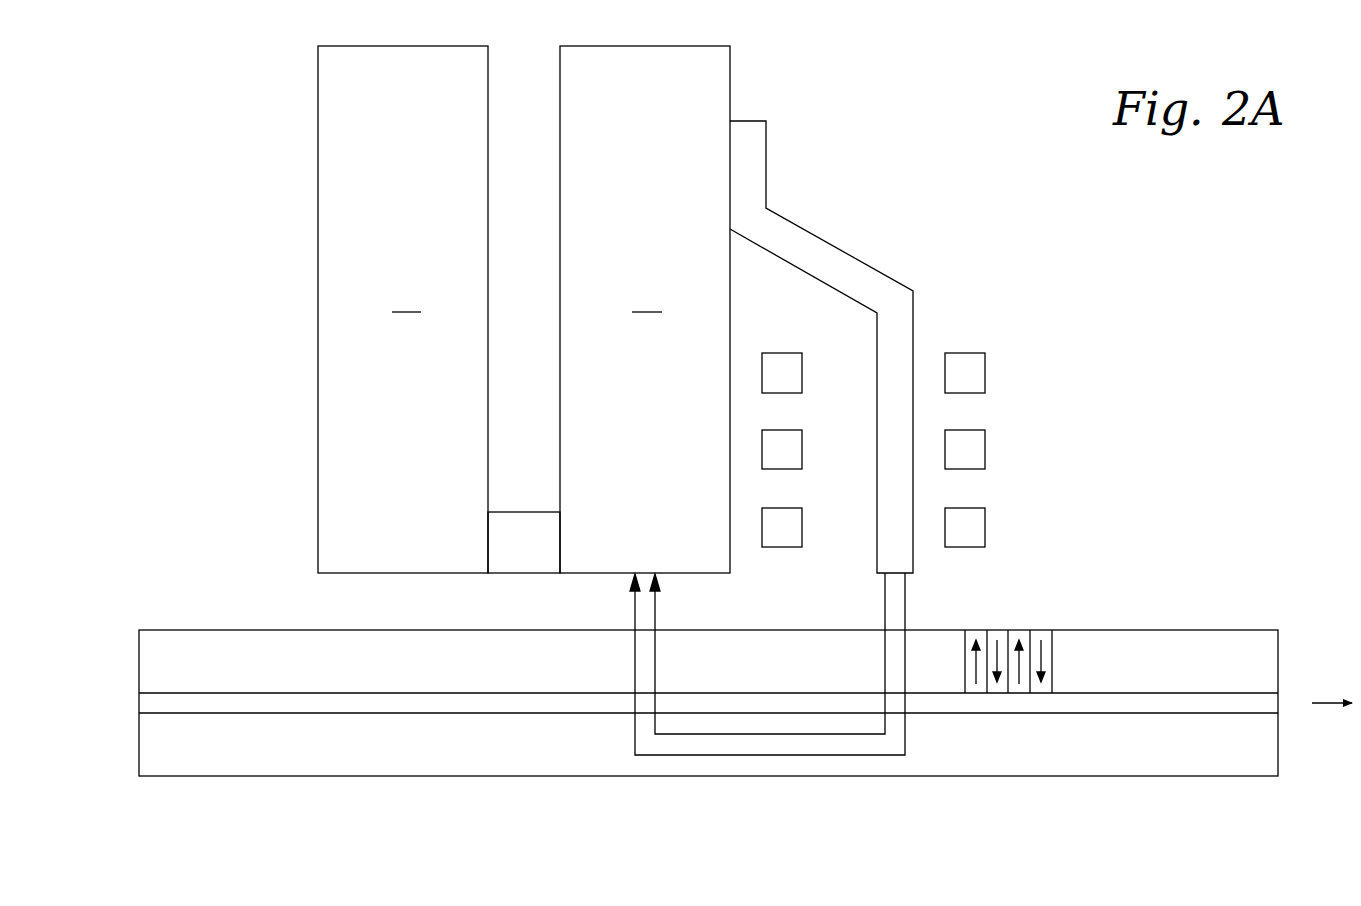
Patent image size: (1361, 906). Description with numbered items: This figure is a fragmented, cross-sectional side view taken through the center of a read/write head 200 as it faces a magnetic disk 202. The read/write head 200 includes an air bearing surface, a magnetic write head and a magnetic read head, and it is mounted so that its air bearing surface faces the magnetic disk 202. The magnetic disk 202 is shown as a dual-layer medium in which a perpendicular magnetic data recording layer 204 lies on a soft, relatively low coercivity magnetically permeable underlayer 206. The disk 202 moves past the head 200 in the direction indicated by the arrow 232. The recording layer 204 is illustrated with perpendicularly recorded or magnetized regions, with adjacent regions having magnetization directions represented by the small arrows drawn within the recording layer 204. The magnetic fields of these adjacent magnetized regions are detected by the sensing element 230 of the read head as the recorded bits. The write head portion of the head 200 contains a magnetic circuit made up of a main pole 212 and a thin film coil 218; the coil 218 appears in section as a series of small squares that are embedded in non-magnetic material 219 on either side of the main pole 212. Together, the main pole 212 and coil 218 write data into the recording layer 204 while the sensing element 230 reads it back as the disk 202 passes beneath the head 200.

The read/write head 200 is at (166, 88).
The magnetic disk 202 is at (160, 594).
The perpendicular magnetic data recording layer 204 is at (139, 660).
The magnetically permeable underlayer 206 is at (139, 702).
The main pole 212 is at (900, 487).
The thin film coil 218 is at (790, 372).
The non-magnetic material 219 is at (986, 325).
The sensing element 230 is at (546, 556).
The arrow 232 is at (1327, 703).